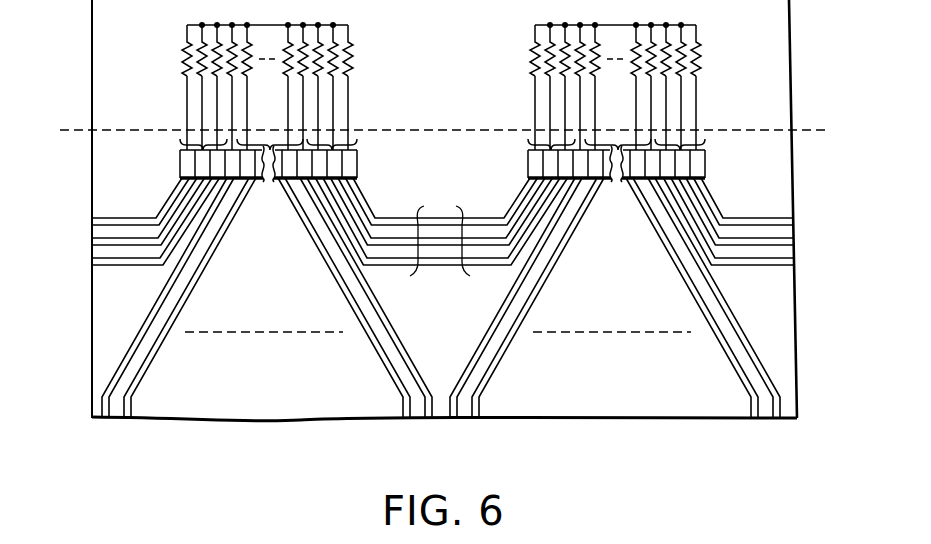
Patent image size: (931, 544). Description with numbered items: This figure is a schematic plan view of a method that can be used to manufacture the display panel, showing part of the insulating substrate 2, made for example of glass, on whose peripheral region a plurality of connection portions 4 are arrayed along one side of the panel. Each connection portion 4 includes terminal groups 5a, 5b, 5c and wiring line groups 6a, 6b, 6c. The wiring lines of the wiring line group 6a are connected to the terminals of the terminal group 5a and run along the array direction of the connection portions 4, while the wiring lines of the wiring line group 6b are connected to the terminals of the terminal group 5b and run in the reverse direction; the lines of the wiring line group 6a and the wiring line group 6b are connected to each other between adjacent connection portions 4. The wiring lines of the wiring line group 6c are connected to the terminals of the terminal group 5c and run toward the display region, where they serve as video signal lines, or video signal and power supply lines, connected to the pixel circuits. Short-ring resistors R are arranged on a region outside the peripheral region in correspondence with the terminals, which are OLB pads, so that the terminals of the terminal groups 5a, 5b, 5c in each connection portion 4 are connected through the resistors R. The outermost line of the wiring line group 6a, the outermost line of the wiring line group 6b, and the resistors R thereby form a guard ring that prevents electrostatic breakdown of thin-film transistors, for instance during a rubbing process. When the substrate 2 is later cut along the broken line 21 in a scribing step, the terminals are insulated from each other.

The short-ring resistor R is at (183, 58).
The insulating substrate 2 is at (788, 330).
The connection portion 4 is at (121, 190).
The broken line 21 is at (818, 127).
The terminal group 5a is at (203, 144).
The terminal group 5b is at (332, 144).
The terminal group 5c is at (270, 144).
The wiring line group 6a is at (90, 212).
The wiring line group 6b is at (795, 212).
The wiring line group 6c is at (430, 428).